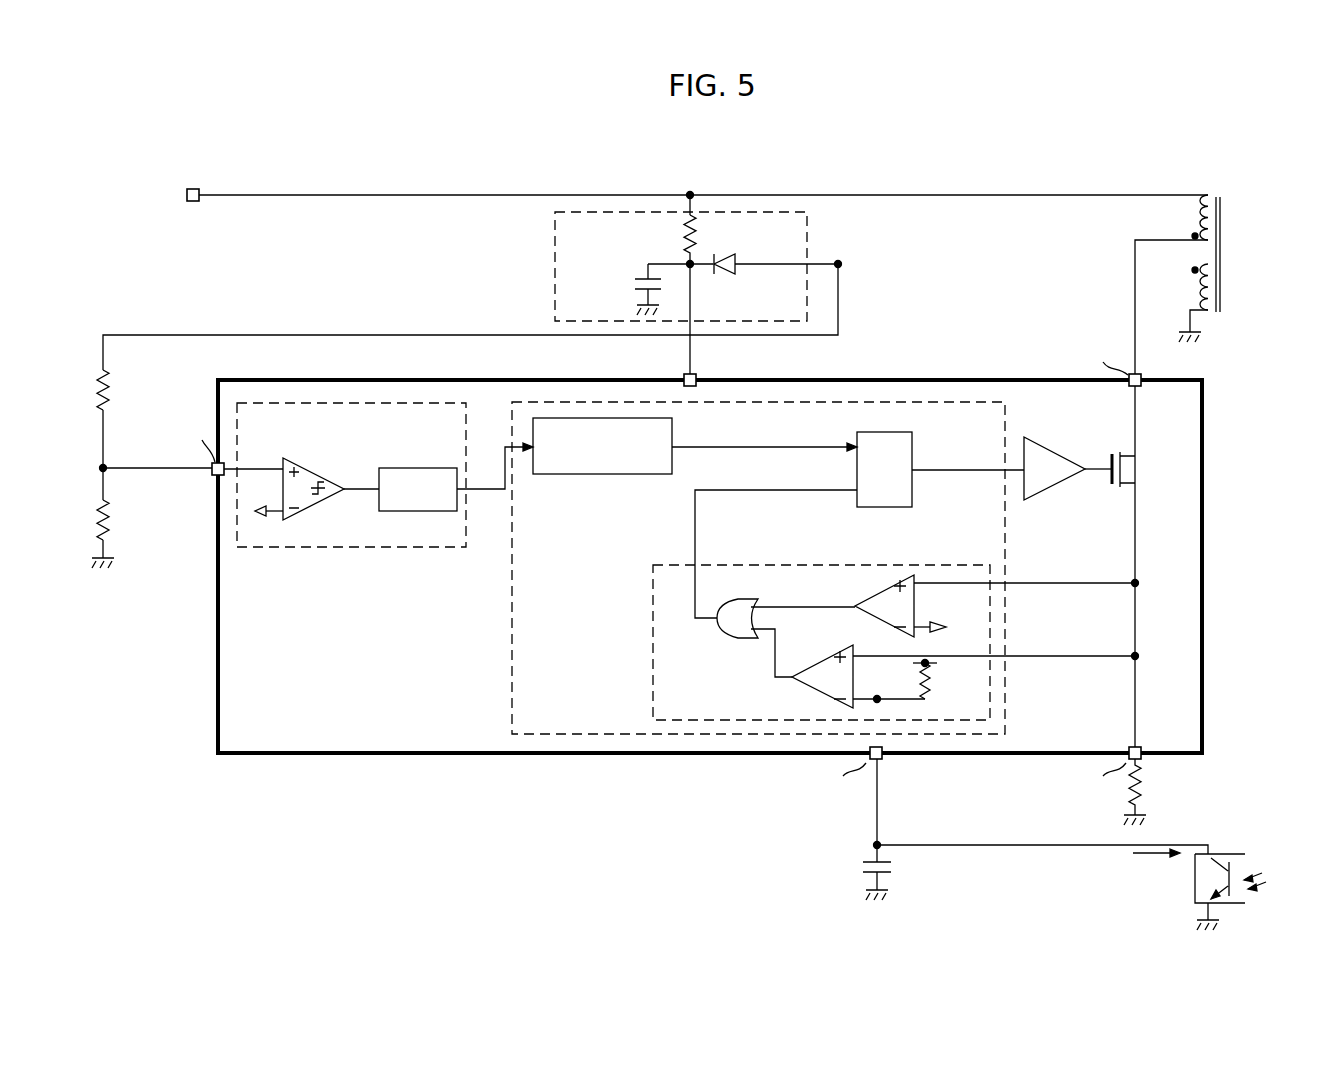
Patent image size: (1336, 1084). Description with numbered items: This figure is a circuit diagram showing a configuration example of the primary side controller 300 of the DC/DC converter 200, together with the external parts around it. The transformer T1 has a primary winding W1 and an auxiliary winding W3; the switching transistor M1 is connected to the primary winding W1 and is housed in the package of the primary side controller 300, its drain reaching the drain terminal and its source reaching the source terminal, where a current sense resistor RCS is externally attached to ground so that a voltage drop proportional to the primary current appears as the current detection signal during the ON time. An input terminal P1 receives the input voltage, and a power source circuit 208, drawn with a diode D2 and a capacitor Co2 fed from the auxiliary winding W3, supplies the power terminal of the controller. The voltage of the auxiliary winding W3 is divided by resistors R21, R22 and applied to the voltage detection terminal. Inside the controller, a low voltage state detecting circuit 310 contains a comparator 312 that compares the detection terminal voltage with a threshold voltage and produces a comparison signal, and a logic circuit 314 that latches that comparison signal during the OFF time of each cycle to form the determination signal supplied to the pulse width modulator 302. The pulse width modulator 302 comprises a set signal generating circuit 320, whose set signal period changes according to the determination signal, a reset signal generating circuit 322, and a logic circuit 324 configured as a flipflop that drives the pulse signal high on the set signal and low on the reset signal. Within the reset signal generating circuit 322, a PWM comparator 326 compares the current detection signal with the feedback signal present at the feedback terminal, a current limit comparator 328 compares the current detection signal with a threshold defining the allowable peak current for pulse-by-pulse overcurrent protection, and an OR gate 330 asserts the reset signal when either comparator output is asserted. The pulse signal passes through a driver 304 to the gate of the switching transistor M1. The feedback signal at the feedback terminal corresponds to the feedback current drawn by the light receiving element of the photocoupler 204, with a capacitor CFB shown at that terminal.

The DC/DC converter 200 is at (1327, 145).
The photocoupler 204 is at (1236, 850).
The power source circuit 208 is at (554, 268).
The primary side controller 300 is at (718, 366).
The pulse width modulator 302 is at (512, 656).
The driver 304 is at (1048, 444).
The low voltage state detecting circuit 310 is at (336, 548).
The comparator 312 is at (302, 460).
The logic circuit 314 is at (406, 467).
The set signal generating circuit 320 is at (588, 475).
The reset signal generating circuit 322 is at (654, 656).
The logic circuit 324 is at (876, 433).
The PWM comparator 326 is at (836, 662).
The current limit comparator 328 is at (880, 593).
The OR gate 330 is at (730, 640).
The input terminal P1 is at (195, 186).
The transformer T1 is at (1175, 156).
The primary winding W1 is at (1203, 192).
The auxiliary winding W3 is at (1194, 286).
The switching transistor M1 is at (1142, 470).
The diode D2 is at (735, 250).
The capacitor Co2 is at (620, 283).
The resistor R21 is at (118, 390).
The resistor R22 is at (118, 520).
The current sense resistor RCS is at (1146, 790).
The feedback capacitor CFB is at (896, 866).